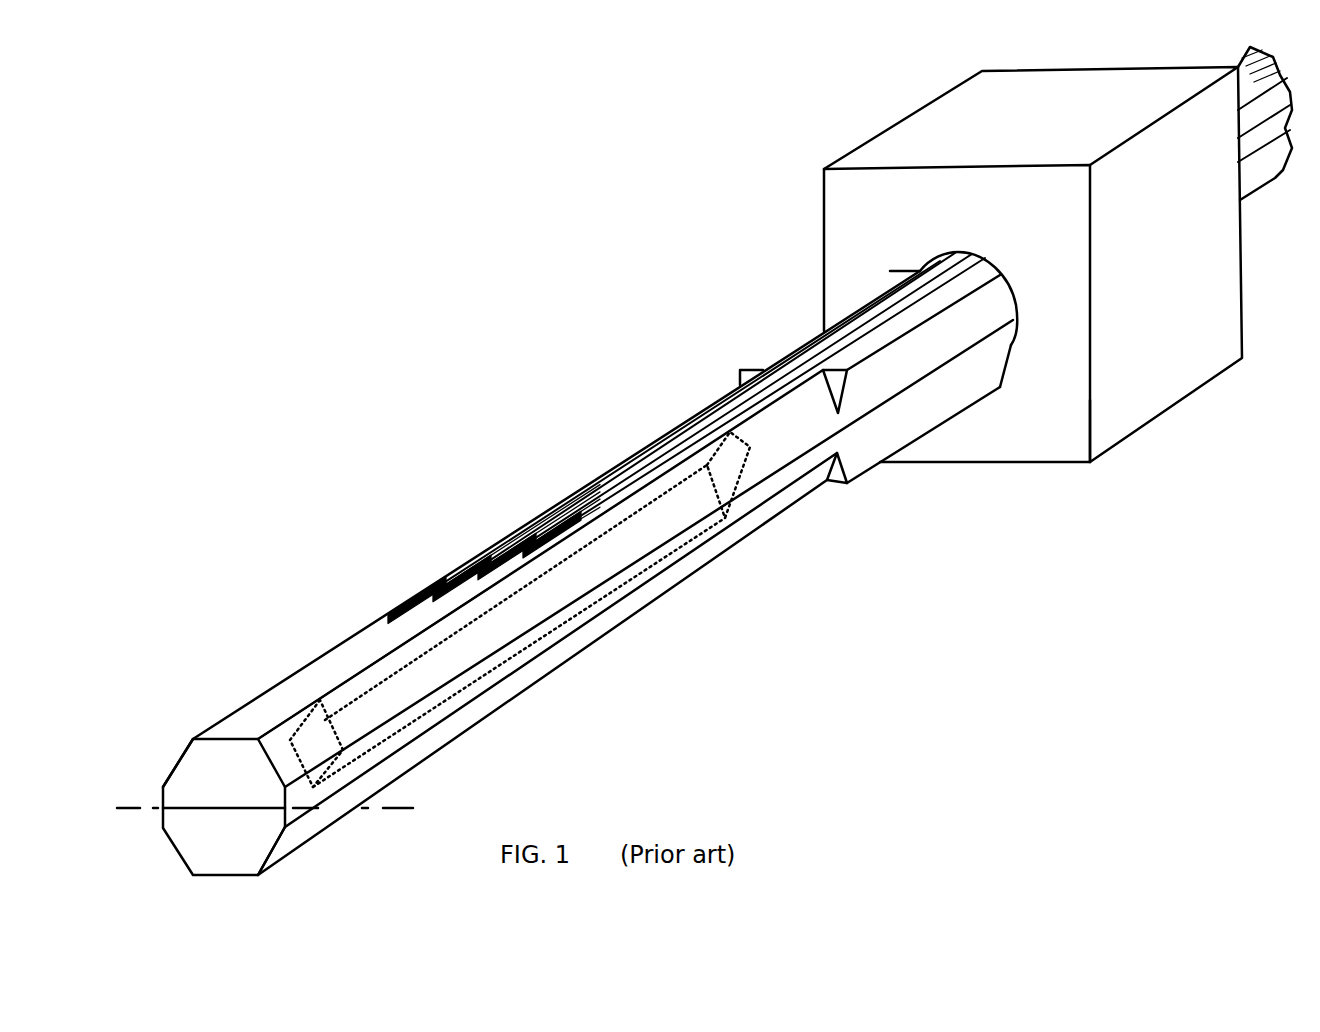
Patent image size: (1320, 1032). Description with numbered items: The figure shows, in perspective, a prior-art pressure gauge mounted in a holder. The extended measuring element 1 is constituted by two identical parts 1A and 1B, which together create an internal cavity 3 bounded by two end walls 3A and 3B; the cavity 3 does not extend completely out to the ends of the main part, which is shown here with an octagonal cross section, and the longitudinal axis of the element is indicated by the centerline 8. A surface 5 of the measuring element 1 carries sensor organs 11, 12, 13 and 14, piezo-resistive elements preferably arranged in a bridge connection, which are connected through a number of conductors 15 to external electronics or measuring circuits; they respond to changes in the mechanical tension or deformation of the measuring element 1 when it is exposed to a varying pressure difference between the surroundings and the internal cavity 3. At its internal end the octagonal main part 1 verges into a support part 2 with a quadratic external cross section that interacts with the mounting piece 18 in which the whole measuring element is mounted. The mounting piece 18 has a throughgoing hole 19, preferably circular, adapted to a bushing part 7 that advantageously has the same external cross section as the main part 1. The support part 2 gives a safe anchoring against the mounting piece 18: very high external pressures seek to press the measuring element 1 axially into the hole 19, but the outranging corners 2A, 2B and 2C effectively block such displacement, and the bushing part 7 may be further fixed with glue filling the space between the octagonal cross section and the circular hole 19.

The measuring element 1 is at (280, 667).
The first part of measuring element 1A is at (258, 838).
The second part of measuring element 1B is at (178, 765).
The support part 2 is at (917, 430).
The outranging corner 2A is at (1000, 387).
The outranging corner 2B is at (1000, 274).
The outranging corner 2C is at (890, 271).
The internal cavity 3 is at (575, 575).
The end wall 3A is at (340, 725).
The end wall 3B is at (757, 450).
The surface 5 is at (344, 640).
The bushing part 7 is at (1267, 168).
The longitudinal axis 8 is at (393, 813).
The sensor organ 11 is at (405, 612).
The sensor organ 12 is at (462, 580).
The sensor organ 13 is at (504, 545).
The sensor organ 14 is at (563, 512).
The conductors 15 is at (682, 437).
The mounting piece 18 is at (1180, 385).
The throughgoing hole 19 is at (1012, 343).